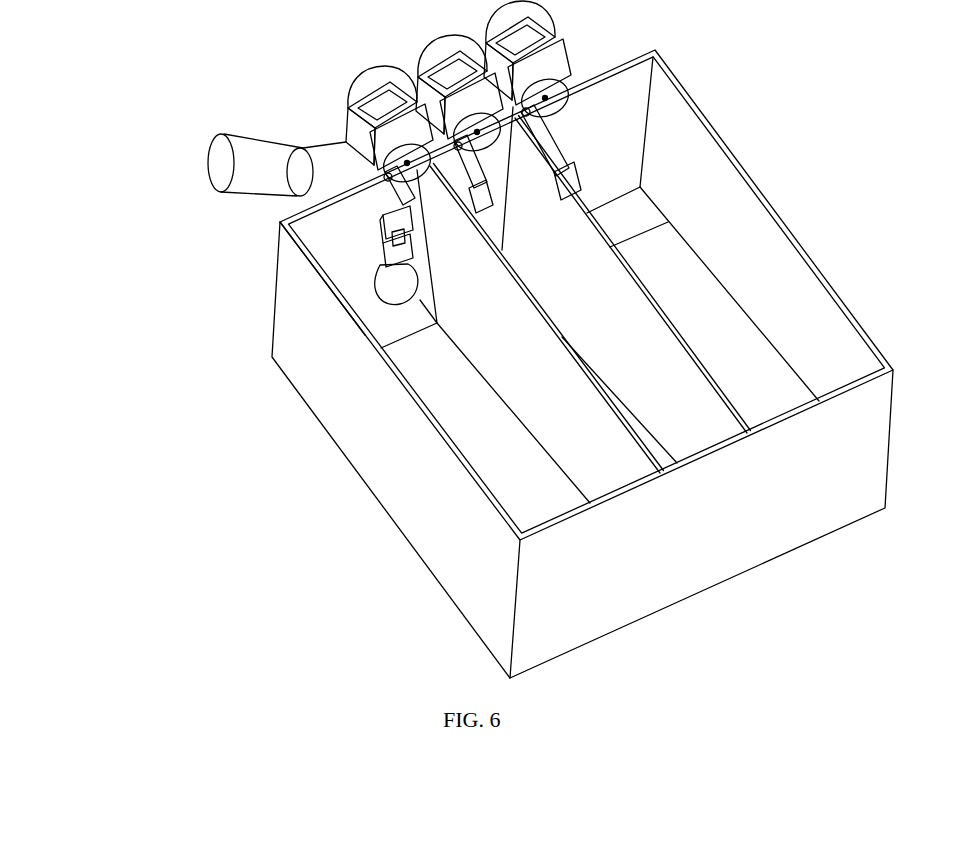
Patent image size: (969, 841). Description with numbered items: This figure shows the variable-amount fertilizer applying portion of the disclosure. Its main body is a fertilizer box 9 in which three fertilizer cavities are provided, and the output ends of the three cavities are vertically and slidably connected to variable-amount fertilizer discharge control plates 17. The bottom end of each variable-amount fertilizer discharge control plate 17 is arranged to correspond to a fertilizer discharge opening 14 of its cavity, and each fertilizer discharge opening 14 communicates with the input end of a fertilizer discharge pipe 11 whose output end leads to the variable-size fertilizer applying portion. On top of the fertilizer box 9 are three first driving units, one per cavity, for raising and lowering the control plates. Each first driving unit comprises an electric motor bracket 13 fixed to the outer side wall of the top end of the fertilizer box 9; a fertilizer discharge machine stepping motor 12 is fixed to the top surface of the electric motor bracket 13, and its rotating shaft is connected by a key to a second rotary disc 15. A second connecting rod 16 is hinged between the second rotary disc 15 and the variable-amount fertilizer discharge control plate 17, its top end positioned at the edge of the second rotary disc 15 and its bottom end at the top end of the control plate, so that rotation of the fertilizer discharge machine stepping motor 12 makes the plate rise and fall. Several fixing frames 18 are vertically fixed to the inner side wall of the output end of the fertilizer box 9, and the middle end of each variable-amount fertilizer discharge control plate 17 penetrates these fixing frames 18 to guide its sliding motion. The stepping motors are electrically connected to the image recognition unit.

The fertilizer box 9 is at (375, 440).
The fertilizer discharge pipe 11 is at (348, 92).
The fertilizer discharge machine stepping motor 12 is at (343, 134).
The electric motor bracket 13 is at (372, 155).
The fertilizer discharge opening 14 is at (364, 333).
The second rotary disc 15 is at (393, 180).
The second connecting rod 16 is at (387, 213).
The variable-amount fertilizer discharge control plate 17 is at (375, 295).
The fixing frame 18 is at (383, 262).